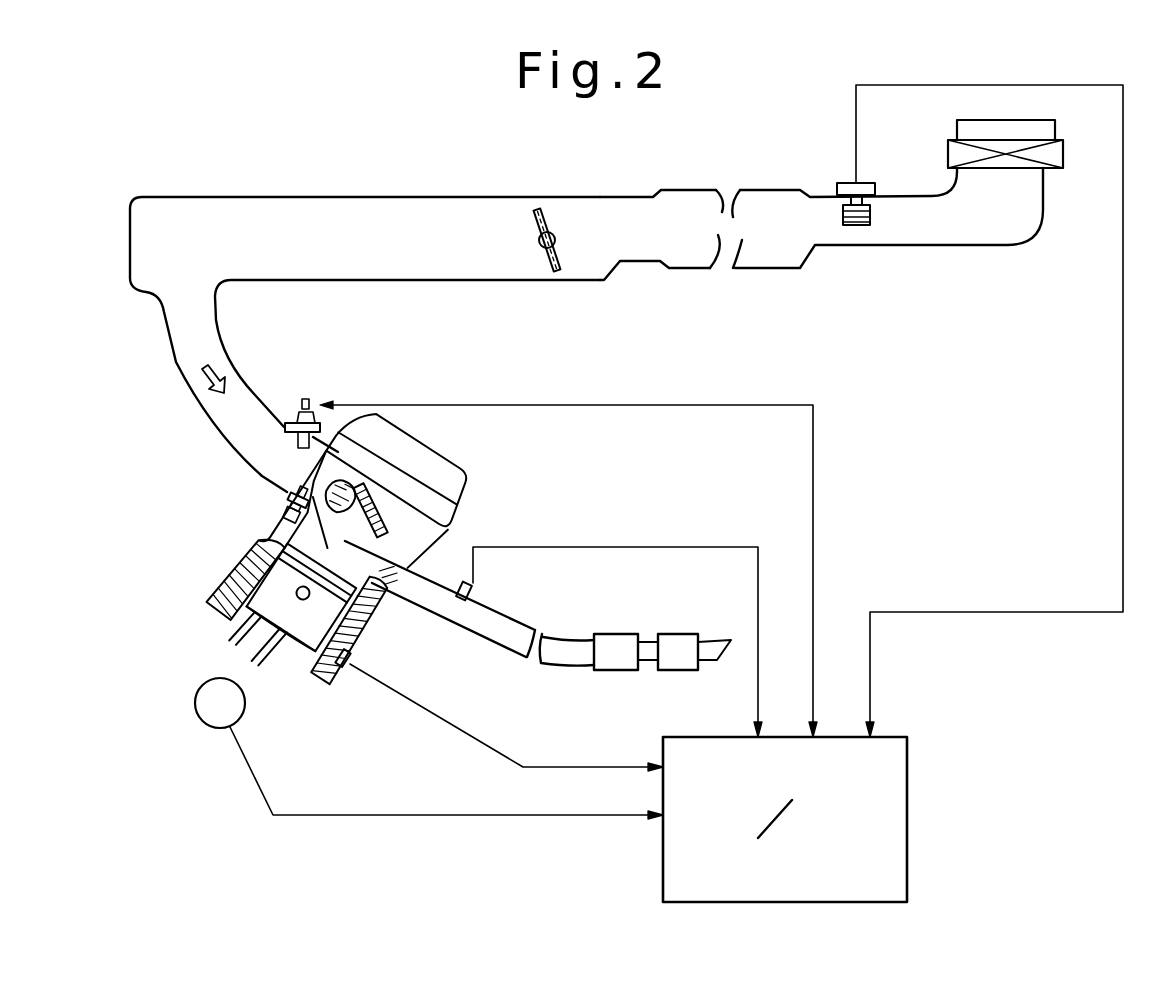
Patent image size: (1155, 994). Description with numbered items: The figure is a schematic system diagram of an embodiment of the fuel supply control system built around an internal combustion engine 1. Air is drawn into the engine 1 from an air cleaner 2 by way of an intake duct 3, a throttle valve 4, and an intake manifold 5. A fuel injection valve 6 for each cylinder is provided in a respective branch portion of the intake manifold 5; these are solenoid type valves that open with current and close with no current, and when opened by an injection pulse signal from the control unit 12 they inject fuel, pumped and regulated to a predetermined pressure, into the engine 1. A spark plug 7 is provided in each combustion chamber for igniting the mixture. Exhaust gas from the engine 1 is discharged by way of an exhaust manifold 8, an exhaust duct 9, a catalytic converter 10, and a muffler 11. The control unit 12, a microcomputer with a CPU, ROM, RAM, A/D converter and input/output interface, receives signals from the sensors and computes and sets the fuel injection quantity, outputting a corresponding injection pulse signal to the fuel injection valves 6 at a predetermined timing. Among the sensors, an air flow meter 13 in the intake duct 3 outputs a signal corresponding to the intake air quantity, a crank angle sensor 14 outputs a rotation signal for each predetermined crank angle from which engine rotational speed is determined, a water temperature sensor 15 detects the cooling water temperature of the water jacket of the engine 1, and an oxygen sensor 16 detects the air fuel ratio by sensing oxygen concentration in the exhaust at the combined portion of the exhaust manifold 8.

The internal combustion engine 1 is at (466, 537).
The air cleaner 2 is at (1063, 163).
The intake duct 3 is at (763, 190).
The throttle valve 4 is at (547, 262).
The intake manifold 5 is at (162, 318).
The fuel injection valve 6 is at (305, 402).
The spark plug 7 is at (288, 490).
The exhaust manifold 8 is at (462, 620).
The exhaust duct 9 is at (575, 668).
The catalytic converter 10 is at (628, 632).
The muffler 11 is at (688, 636).
The control unit 12 is at (907, 787).
The air flow meter 13 is at (848, 181).
The crank angle sensor 14 is at (195, 710).
The water temperature sensor 15 is at (348, 650).
The oxygen sensor 16 is at (472, 592).